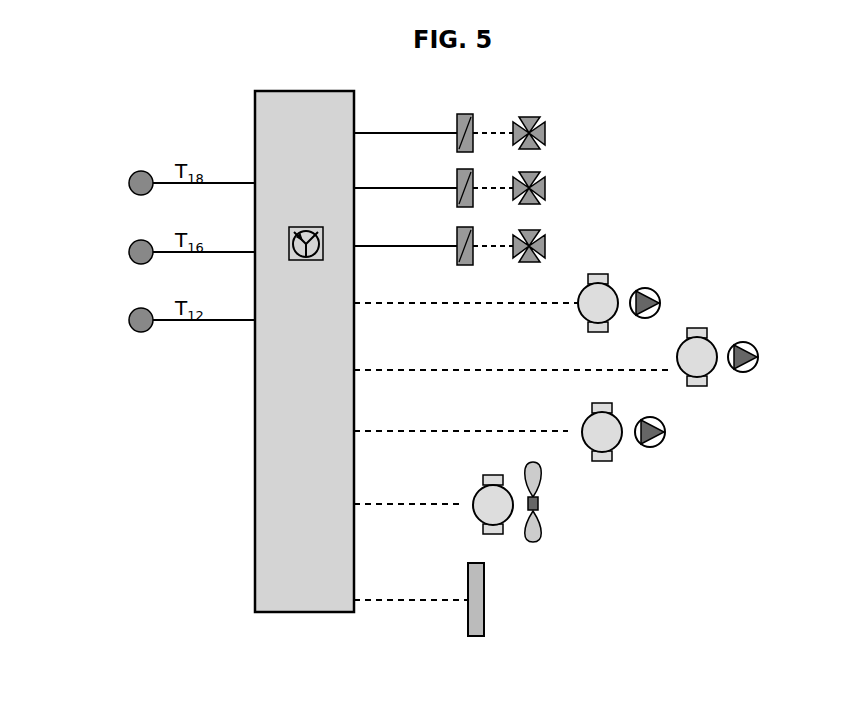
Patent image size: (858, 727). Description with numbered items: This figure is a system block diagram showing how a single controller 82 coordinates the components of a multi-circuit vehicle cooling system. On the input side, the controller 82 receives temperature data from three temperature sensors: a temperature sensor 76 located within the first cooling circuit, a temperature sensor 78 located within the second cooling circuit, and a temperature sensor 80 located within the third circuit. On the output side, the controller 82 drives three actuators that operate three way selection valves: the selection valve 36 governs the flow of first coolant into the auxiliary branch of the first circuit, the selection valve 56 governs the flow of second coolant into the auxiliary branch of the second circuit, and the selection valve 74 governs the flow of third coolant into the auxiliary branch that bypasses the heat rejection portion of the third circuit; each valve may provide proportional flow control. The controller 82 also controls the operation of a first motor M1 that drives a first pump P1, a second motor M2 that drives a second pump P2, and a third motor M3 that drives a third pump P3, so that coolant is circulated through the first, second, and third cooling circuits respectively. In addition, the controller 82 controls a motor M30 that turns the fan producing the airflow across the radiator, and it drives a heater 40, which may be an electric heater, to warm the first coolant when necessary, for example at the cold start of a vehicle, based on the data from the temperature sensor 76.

The controller 82 is at (314, 90).
The temperature sensor 76 is at (129, 179).
The temperature sensor 78 is at (129, 248).
The temperature sensor 80 is at (129, 316).
The selection valve 36 is at (547, 133).
The selection valve 56 is at (547, 188).
The selection valve 74 is at (547, 246).
The first motor M1 is at (610, 276).
The second motor M2 is at (710, 332).
The third motor M3 is at (621, 452).
The first pump P1 is at (663, 302).
The second pump P2 is at (762, 357).
The third pump P3 is at (673, 440).
The motor M30 is at (478, 517).
The heater 40 is at (491, 608).